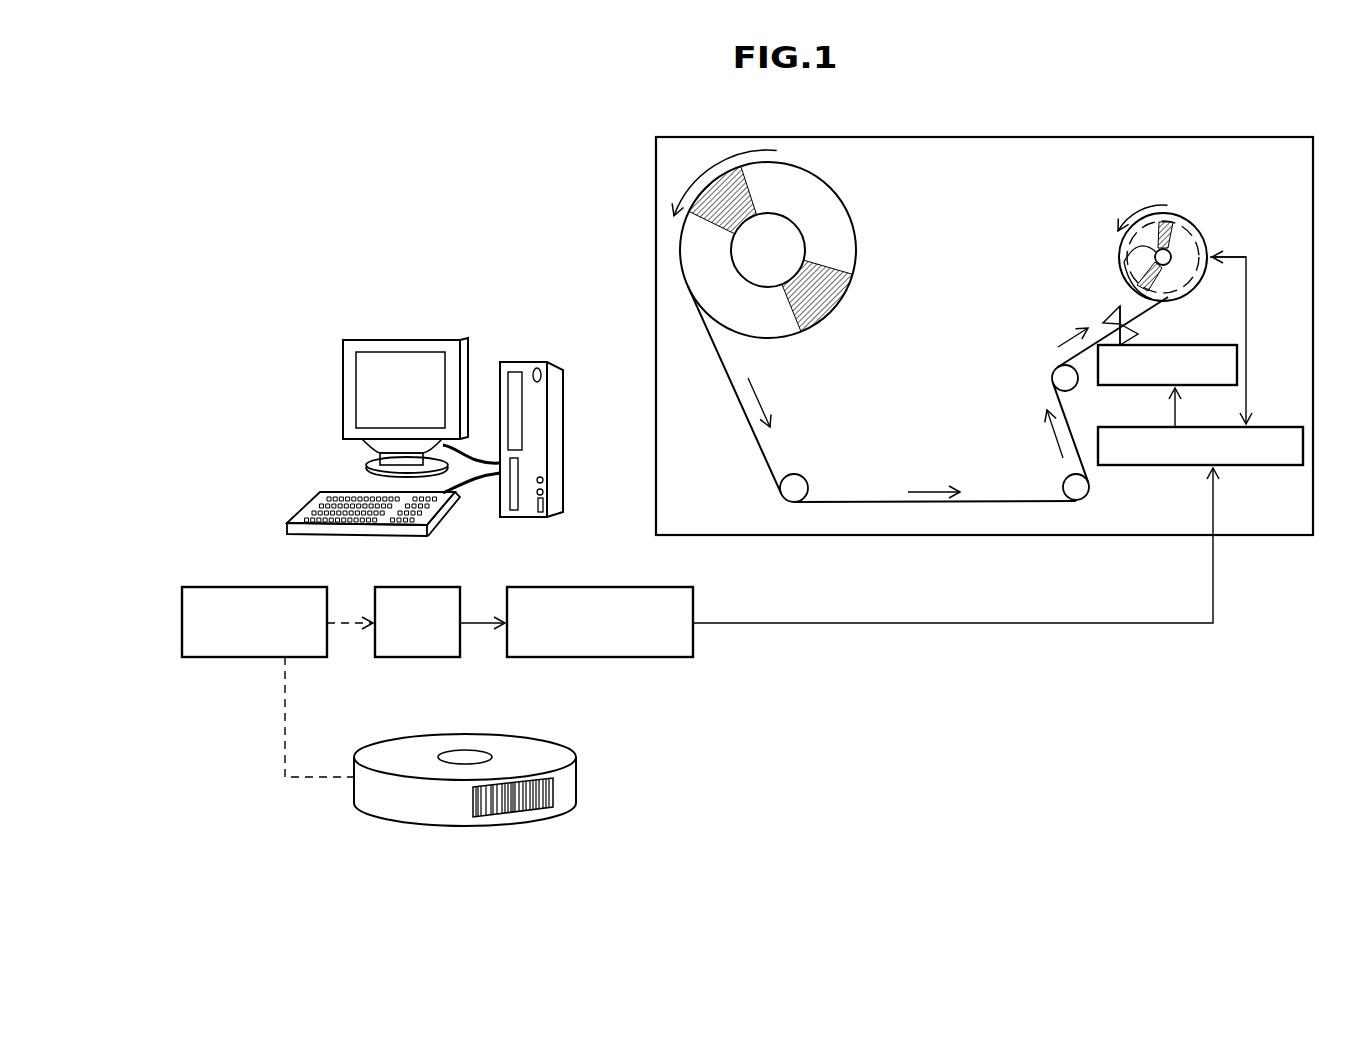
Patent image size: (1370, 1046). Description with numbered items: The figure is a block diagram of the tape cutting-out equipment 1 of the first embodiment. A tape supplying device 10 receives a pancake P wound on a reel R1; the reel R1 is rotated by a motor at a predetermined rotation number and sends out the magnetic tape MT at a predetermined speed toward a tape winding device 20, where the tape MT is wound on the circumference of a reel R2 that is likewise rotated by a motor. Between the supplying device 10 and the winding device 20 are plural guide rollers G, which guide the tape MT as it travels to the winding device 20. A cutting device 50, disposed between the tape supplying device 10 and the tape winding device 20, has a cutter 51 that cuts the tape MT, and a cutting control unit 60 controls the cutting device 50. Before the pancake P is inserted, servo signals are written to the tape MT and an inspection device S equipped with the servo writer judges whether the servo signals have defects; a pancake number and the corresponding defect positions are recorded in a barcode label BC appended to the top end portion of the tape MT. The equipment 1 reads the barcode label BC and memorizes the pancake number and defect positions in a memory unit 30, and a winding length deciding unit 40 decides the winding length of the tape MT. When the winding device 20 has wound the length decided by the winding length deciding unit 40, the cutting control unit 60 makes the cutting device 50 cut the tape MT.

The tape cutting-out equipment 1 is at (565, 212).
The pancake P is at (808, 188).
The reel R1 is at (780, 240).
The tape supplying device 10 is at (857, 252).
The magnetic tape MT is at (719, 352).
The guide rollers G is at (797, 484).
The tape winding device 20 is at (1202, 231).
The reel R2 is at (1124, 262).
The cutter 51 is at (1108, 319).
The cutting device 50 is at (1188, 345).
The cutting control unit 60 is at (1273, 427).
The inspection device S is at (304, 587).
The memory unit 30 is at (435, 587).
The winding length deciding unit 40 is at (568, 587).
The barcode label BC is at (522, 800).